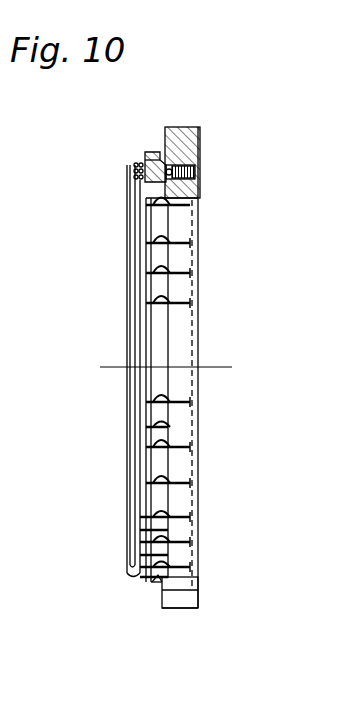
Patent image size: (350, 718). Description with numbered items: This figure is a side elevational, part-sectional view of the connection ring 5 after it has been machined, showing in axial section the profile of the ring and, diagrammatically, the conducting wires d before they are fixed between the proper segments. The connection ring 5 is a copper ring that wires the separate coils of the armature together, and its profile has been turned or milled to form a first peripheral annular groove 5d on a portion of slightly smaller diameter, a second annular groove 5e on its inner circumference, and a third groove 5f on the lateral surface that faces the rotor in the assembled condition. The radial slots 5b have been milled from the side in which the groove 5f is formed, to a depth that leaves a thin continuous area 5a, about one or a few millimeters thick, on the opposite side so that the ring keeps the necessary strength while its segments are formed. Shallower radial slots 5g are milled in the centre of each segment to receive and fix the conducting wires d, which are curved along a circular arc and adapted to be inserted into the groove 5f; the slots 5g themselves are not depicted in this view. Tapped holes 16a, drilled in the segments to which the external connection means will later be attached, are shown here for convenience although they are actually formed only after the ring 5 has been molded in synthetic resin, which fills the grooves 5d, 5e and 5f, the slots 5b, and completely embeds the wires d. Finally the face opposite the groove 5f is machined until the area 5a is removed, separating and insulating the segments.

The connection ring 5 is at (185, 240).
The area 5a is at (192, 612).
The radial slots 5b is at (185, 274).
The first peripheral annular groove 5d is at (158, 590).
The second annular groove 5e is at (185, 303).
The third groove 5f is at (148, 163).
The radial slots 5g is at (160, 486).
The tapped holes 16a is at (200, 171).
The conducting wires d is at (132, 171).